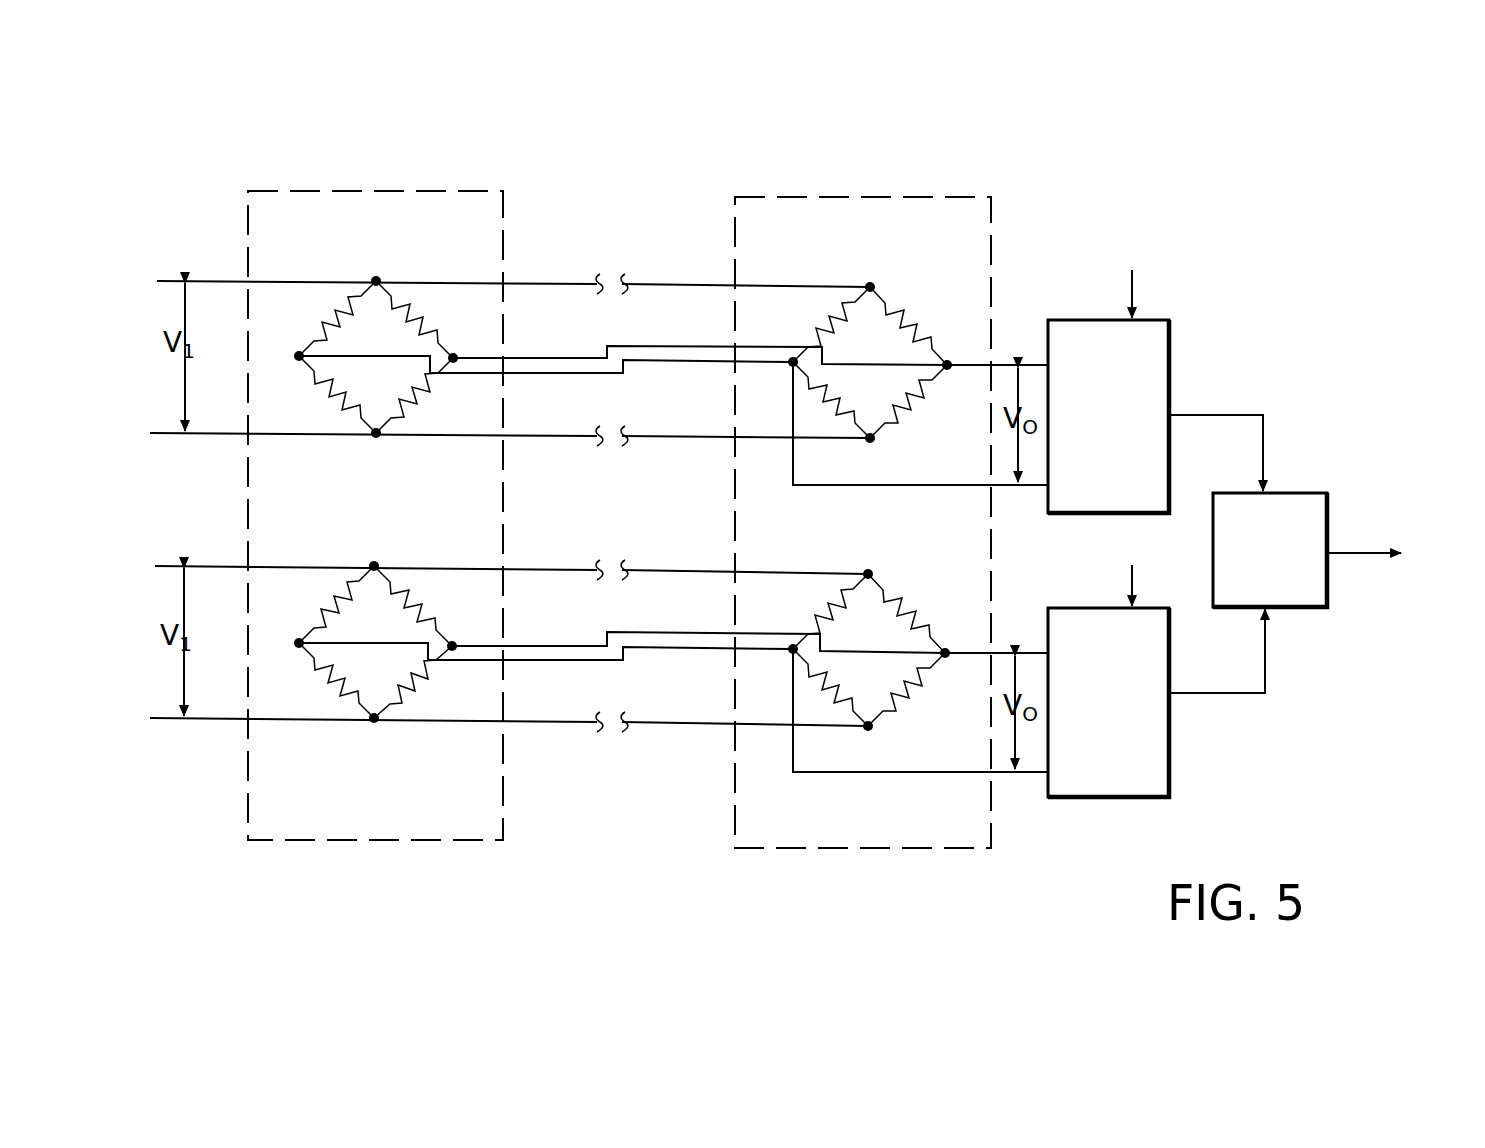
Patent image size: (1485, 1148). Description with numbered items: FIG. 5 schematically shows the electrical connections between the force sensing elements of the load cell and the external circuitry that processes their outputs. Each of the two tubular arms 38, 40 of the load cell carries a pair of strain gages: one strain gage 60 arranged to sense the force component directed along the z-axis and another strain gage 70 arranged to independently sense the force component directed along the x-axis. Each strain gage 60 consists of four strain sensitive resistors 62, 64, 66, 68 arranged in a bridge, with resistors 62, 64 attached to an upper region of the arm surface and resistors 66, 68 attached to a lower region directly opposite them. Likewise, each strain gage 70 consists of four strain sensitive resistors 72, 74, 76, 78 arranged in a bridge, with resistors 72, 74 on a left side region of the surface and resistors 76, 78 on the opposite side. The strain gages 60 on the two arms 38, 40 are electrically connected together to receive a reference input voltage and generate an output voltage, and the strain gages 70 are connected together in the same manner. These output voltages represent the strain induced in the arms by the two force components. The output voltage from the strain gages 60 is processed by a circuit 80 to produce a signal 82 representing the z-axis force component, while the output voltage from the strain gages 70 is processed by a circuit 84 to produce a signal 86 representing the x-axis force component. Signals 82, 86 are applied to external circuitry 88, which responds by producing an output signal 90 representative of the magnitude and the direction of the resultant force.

The tubular arm 38 is at (293, 190).
The tubular arm 40 is at (788, 195).
The strain gage 60 is at (656, 347).
The strain sensitive resistor 62 is at (327, 311).
The strain sensitive resistor 64 is at (433, 322).
The strain sensitive resistor 66 is at (313, 397).
The strain sensitive resistor 68 is at (438, 400).
The strain gage 70 is at (655, 634).
The strain sensitive resistor 72 is at (327, 595).
The strain sensitive resistor 74 is at (427, 605).
The strain sensitive resistor 76 is at (315, 683).
The strain sensitive resistor 78 is at (433, 687).
The circuit 80 is at (1065, 318).
The signal 82 is at (1202, 420).
The circuit 84 is at (1062, 607).
The signal 86 is at (1215, 690).
The external circuitry 88 is at (1302, 488).
The output signal 90 is at (1350, 552).